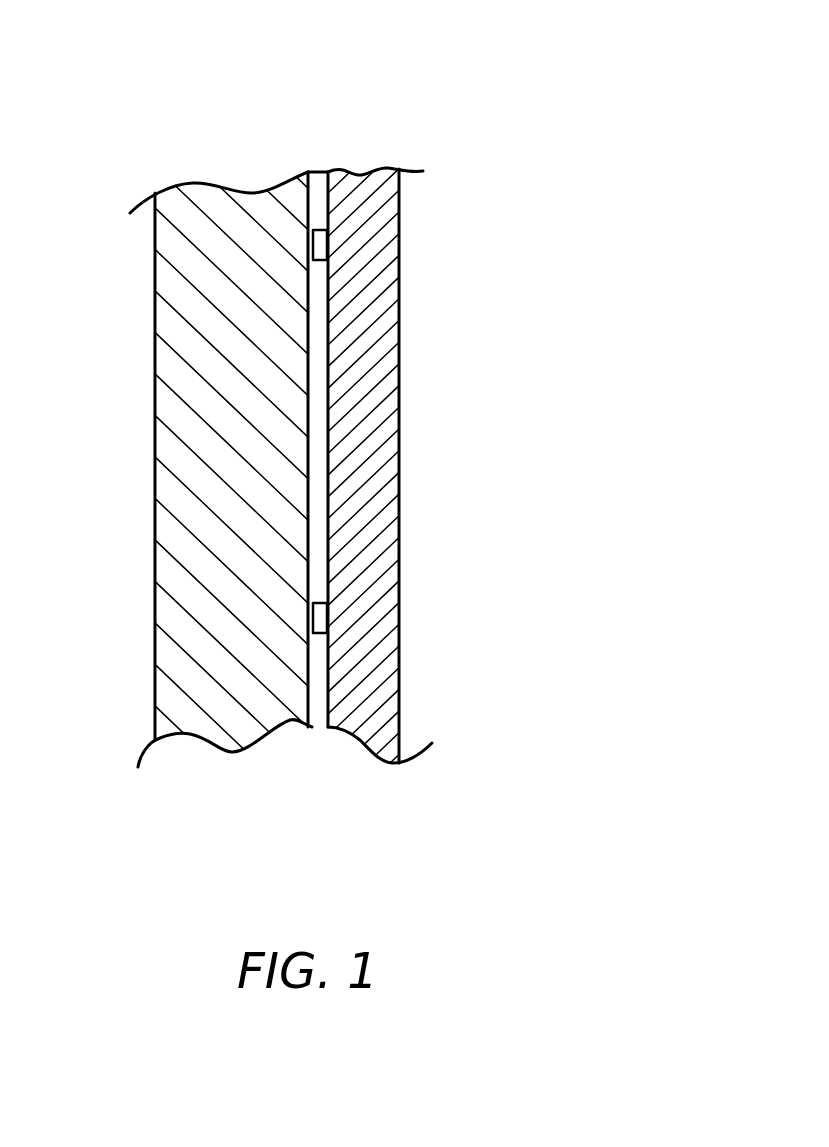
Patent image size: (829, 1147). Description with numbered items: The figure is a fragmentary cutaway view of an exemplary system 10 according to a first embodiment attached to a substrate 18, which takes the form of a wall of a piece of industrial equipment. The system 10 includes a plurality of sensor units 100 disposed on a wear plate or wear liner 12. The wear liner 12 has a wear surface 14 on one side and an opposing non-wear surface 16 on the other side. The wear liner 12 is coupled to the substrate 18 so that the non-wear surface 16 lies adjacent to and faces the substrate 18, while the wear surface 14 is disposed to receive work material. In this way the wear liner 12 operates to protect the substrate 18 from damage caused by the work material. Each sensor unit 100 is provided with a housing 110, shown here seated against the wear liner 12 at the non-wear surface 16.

The system 10 is at (445, 97).
The wear liner 12 is at (390, 472).
The wear surface 14 is at (400, 408).
The non-wear surface 16 is at (326, 458).
The substrate 18 is at (155, 380).
The sensor unit 100 is at (320, 613).
The housing 110 is at (323, 229).